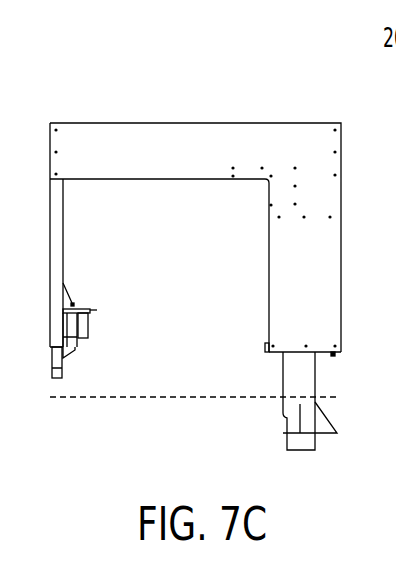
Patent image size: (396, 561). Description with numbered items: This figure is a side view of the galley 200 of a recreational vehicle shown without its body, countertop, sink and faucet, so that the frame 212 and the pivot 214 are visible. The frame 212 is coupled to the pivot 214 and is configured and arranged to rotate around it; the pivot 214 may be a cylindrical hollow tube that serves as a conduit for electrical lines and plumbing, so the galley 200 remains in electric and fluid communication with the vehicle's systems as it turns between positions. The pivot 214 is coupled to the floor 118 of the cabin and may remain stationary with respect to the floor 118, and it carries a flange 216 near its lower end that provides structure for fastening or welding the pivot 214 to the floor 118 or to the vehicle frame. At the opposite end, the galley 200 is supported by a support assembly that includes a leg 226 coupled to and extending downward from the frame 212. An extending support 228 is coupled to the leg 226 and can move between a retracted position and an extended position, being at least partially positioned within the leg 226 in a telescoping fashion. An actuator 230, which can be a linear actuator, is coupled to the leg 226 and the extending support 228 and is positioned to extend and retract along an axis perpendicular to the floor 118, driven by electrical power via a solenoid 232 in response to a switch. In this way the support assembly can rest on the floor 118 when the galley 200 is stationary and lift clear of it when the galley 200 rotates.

The galley 200 is at (104, 100).
The frame 212 is at (327, 280).
The pivot 214 is at (302, 385).
The flange 216 is at (323, 425).
The floor 118 is at (174, 395).
The leg 226 is at (60, 231).
The extending support 228 is at (50, 354).
The actuator 230 is at (70, 338).
The solenoid 232 is at (88, 328).